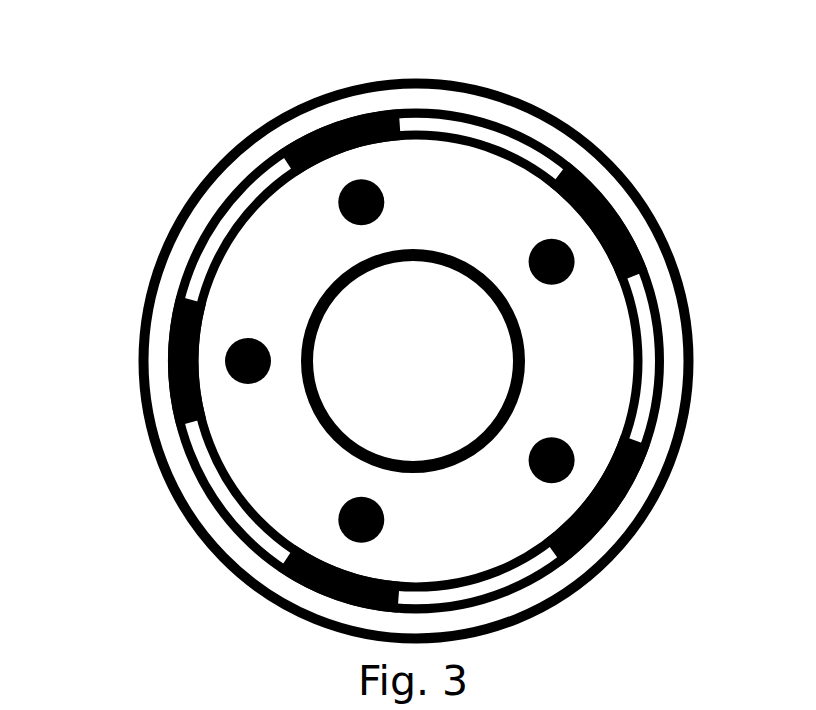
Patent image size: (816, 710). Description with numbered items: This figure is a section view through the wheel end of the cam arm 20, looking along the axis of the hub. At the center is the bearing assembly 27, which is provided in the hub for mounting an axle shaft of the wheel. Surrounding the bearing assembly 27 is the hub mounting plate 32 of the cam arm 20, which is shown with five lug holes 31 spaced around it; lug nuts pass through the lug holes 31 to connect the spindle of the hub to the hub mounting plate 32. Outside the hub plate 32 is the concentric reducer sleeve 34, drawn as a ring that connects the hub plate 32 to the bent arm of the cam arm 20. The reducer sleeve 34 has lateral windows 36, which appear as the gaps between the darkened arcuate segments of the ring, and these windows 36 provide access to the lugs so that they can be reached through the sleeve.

The cam arm 20 is at (124, 209).
The bearing assembly 27 is at (434, 251).
The lug holes 31 is at (383, 189).
The hub mounting plate 32 is at (480, 83).
The concentric reducer sleeve 34 is at (536, 137).
The lateral windows 36 is at (617, 212).